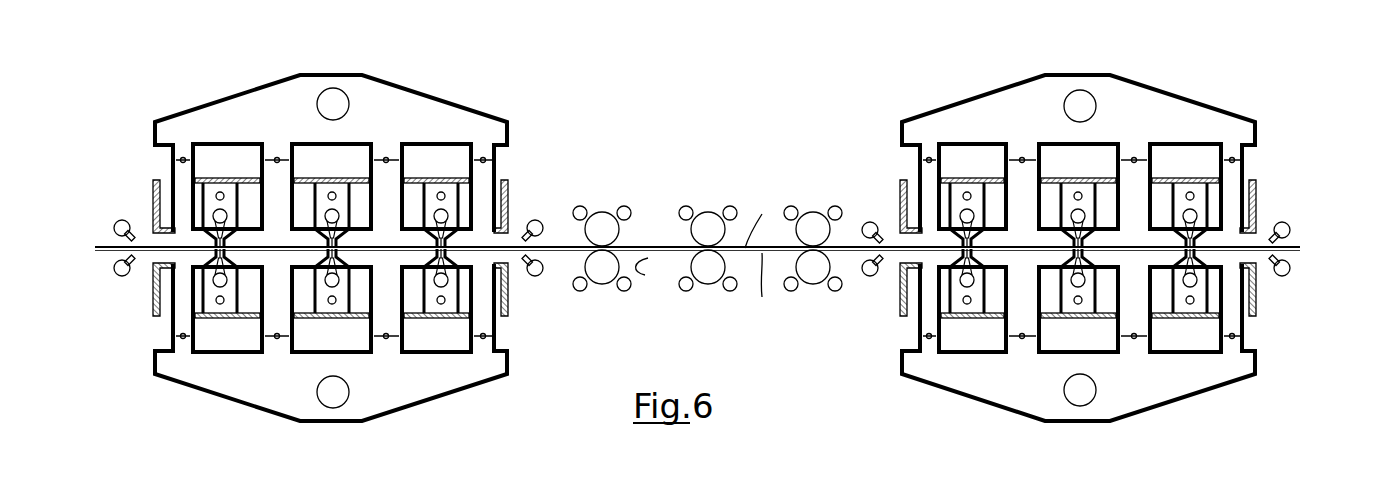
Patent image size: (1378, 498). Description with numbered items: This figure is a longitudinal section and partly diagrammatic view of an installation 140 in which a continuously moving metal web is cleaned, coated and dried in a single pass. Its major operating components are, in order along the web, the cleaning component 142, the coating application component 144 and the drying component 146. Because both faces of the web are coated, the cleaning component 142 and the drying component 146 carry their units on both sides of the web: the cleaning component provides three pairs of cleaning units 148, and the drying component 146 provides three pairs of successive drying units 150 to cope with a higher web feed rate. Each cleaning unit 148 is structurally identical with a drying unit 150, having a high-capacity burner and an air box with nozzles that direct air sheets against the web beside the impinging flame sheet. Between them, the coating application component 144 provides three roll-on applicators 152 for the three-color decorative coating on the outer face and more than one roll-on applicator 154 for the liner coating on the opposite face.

The installation 140 is at (700, 85).
The cleaning component 142 is at (525, 153).
The coating application component 144 is at (722, 230).
The drying component 146 is at (1270, 183).
The cleaning unit 148 is at (412, 368).
The drying unit 150 is at (993, 207).
The roll-on applicator 152 is at (705, 222).
The roll-on applicator 154 is at (712, 273).